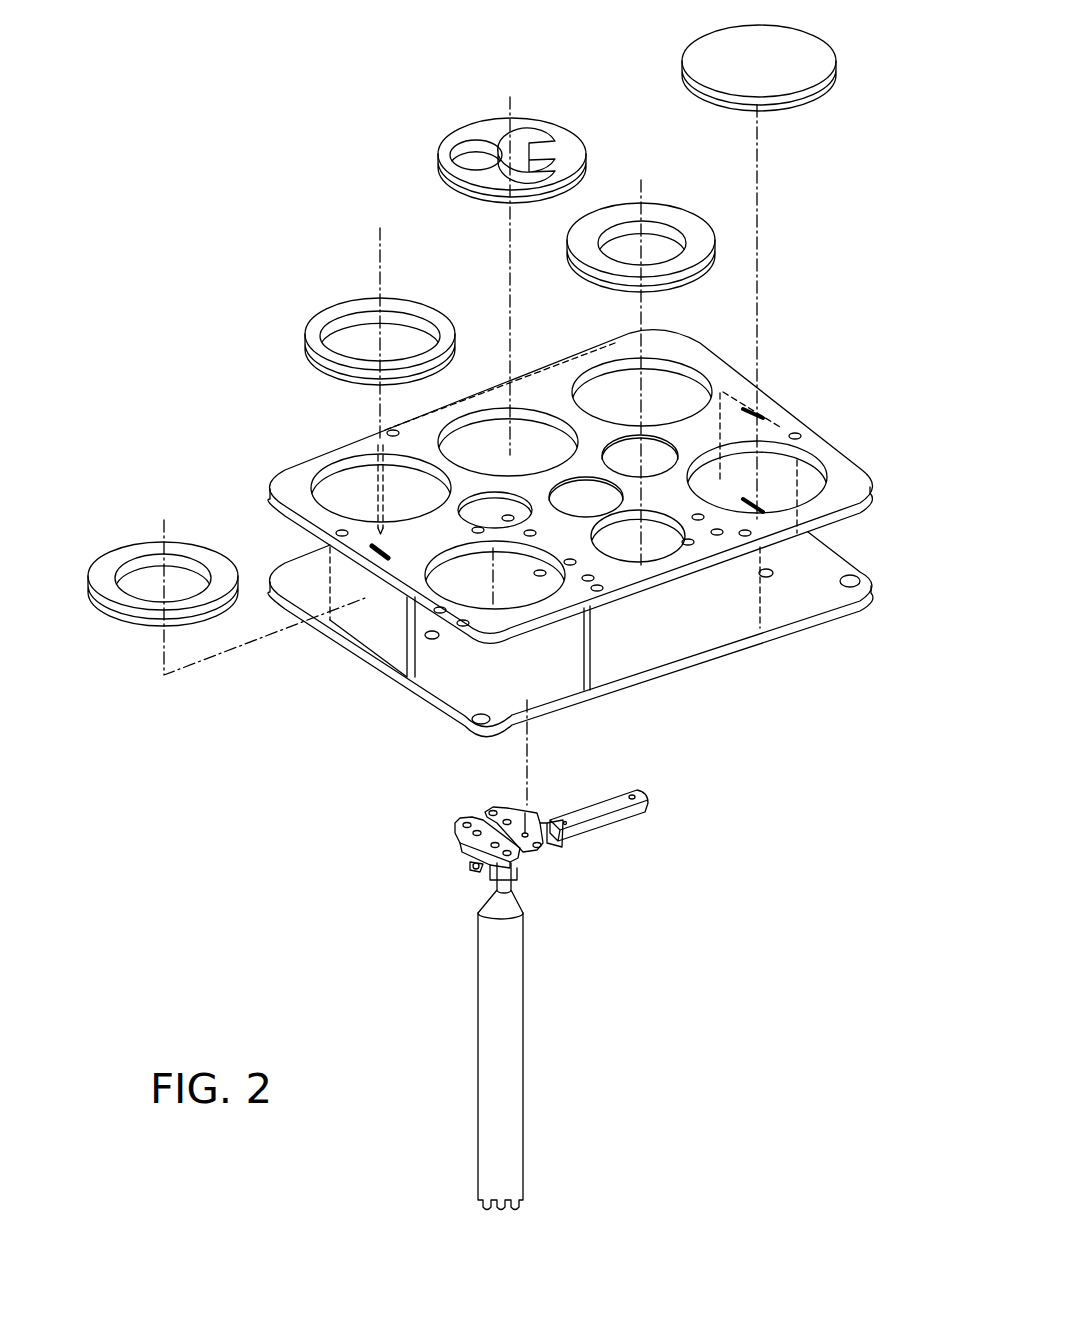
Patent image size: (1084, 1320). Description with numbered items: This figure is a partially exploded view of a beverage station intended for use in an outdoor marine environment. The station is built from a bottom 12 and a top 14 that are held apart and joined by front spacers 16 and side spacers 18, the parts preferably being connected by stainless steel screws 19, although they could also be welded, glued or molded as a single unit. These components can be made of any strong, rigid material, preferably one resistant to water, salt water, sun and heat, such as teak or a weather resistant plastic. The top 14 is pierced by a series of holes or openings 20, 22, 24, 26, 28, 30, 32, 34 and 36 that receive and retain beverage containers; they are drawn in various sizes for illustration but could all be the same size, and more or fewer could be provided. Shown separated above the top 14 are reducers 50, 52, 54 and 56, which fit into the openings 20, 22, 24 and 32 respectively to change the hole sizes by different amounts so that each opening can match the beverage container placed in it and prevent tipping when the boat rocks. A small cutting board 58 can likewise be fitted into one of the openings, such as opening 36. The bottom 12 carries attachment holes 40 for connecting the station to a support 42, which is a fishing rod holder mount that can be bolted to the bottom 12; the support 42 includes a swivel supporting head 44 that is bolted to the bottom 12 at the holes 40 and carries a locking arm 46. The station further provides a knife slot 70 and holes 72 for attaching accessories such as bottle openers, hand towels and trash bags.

The bottom 12 is at (818, 625).
The top 14 is at (775, 400).
The front spacers 16 is at (345, 632).
The side spacers 18 is at (716, 655).
The stainless steel screws 19 is at (797, 437).
The opening 20 is at (325, 470).
The opening 22 is at (490, 412).
The opening 24 is at (600, 352).
The opening 26 is at (497, 527).
The opening 28 is at (580, 485).
The opening 30 is at (666, 440).
The opening 32 is at (522, 600).
The opening 34 is at (668, 550).
The opening 36 is at (815, 470).
The attachment holes 40 is at (768, 574).
The support 42 is at (507, 1018).
The swivel supporting head 44 is at (455, 851).
The locking arm 46 is at (622, 815).
The reducer 50 is at (352, 297).
The reducer 52 is at (472, 118).
The reducer 54 is at (668, 205).
The reducer 56 is at (128, 540).
The small cutting board 58 is at (685, 58).
The knife slot 70 is at (388, 548).
The holes 72 is at (468, 722).